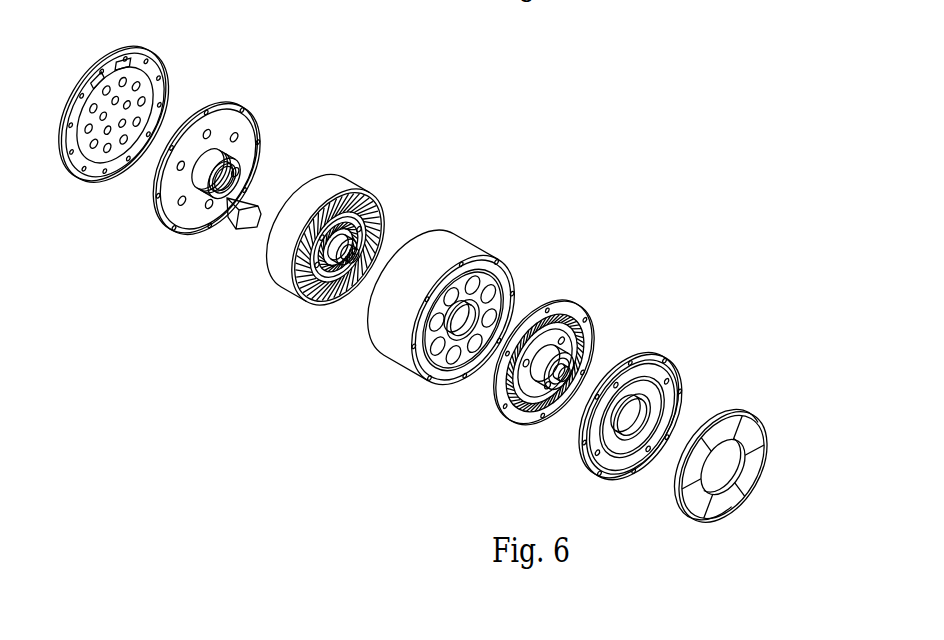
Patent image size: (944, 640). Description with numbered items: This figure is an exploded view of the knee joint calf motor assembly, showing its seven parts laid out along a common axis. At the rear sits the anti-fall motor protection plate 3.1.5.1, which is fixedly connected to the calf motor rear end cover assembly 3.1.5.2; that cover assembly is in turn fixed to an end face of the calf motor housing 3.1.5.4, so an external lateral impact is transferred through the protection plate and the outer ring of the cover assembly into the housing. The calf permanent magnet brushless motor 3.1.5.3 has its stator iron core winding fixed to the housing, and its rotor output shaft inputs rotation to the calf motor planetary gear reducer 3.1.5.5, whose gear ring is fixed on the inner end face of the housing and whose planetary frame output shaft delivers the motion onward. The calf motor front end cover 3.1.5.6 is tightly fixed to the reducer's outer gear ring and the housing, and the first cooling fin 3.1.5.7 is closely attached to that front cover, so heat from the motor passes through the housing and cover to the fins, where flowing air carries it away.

The anti-fall motor protection plate 3.1.5.1 is at (123, 105).
The calf motor rear end cover assembly 3.1.5.2 is at (238, 140).
The calf permanent magnet brushless motor 3.1.5.3 is at (337, 187).
The calf motor housing 3.1.5.4 is at (445, 257).
The calf motor planetary gear reducer 3.1.5.5 is at (563, 315).
The calf motor front end cover 3.1.5.6 is at (663, 377).
The first cooling fin 3.1.5.7 is at (738, 437).